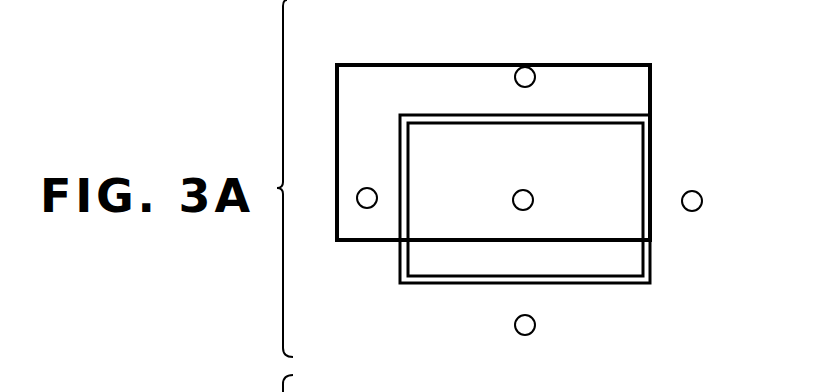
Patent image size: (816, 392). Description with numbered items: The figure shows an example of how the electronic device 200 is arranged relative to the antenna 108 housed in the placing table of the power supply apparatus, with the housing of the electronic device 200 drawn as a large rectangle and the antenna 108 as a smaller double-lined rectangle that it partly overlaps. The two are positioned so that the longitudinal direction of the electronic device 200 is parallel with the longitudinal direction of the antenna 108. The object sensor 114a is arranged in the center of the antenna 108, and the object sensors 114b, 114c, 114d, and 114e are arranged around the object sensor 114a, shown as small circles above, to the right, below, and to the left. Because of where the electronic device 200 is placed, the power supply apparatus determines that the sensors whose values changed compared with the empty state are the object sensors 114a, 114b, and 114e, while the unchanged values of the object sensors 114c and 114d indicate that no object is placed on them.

The electronic device 200 is at (614, 64).
The antenna 108 is at (632, 115).
The object sensor 114a is at (519, 210).
The object sensor 114b is at (525, 67).
The object sensor 114c is at (692, 211).
The object sensor 114d is at (535, 325).
The object sensor 114e is at (362, 208).